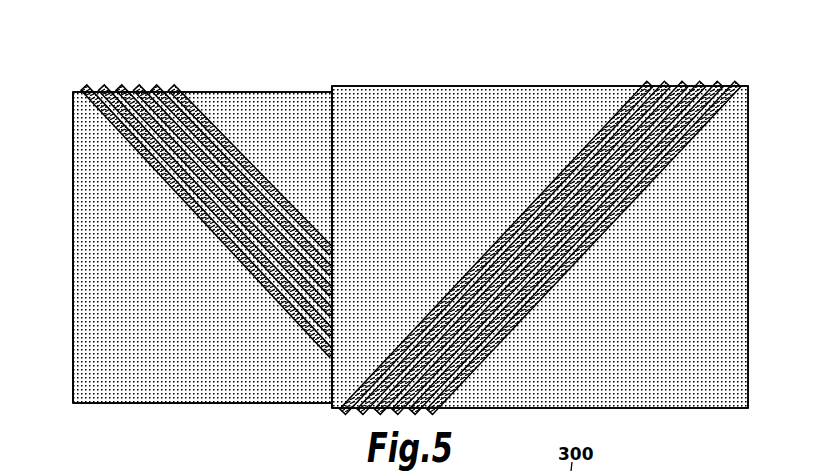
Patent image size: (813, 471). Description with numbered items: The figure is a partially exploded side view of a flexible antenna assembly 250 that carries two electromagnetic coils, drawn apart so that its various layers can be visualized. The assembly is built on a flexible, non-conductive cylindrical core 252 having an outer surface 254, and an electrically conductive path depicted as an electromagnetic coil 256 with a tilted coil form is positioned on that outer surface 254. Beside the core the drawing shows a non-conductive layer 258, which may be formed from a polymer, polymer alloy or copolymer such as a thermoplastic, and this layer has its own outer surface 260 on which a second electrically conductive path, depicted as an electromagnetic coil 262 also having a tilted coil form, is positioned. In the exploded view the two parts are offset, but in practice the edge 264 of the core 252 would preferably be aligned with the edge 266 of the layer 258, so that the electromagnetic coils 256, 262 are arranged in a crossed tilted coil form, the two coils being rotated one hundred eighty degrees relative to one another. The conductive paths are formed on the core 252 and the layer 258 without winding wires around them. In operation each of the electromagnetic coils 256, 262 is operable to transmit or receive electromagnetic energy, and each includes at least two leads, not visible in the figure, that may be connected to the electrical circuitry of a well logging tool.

The flexible antenna assembly 250 is at (549, 74).
The flexible, non-conductive cylindrical core 252 is at (95, 214).
The outer surface 254 is at (98, 276).
The electromagnetic coil 256 is at (208, 221).
The non-conductive layer 258 is at (723, 213).
The outer surface 260 is at (723, 277).
The electromagnetic coil 262 is at (540, 247).
The edge 264 is at (73, 340).
The edge 266 is at (331, 378).